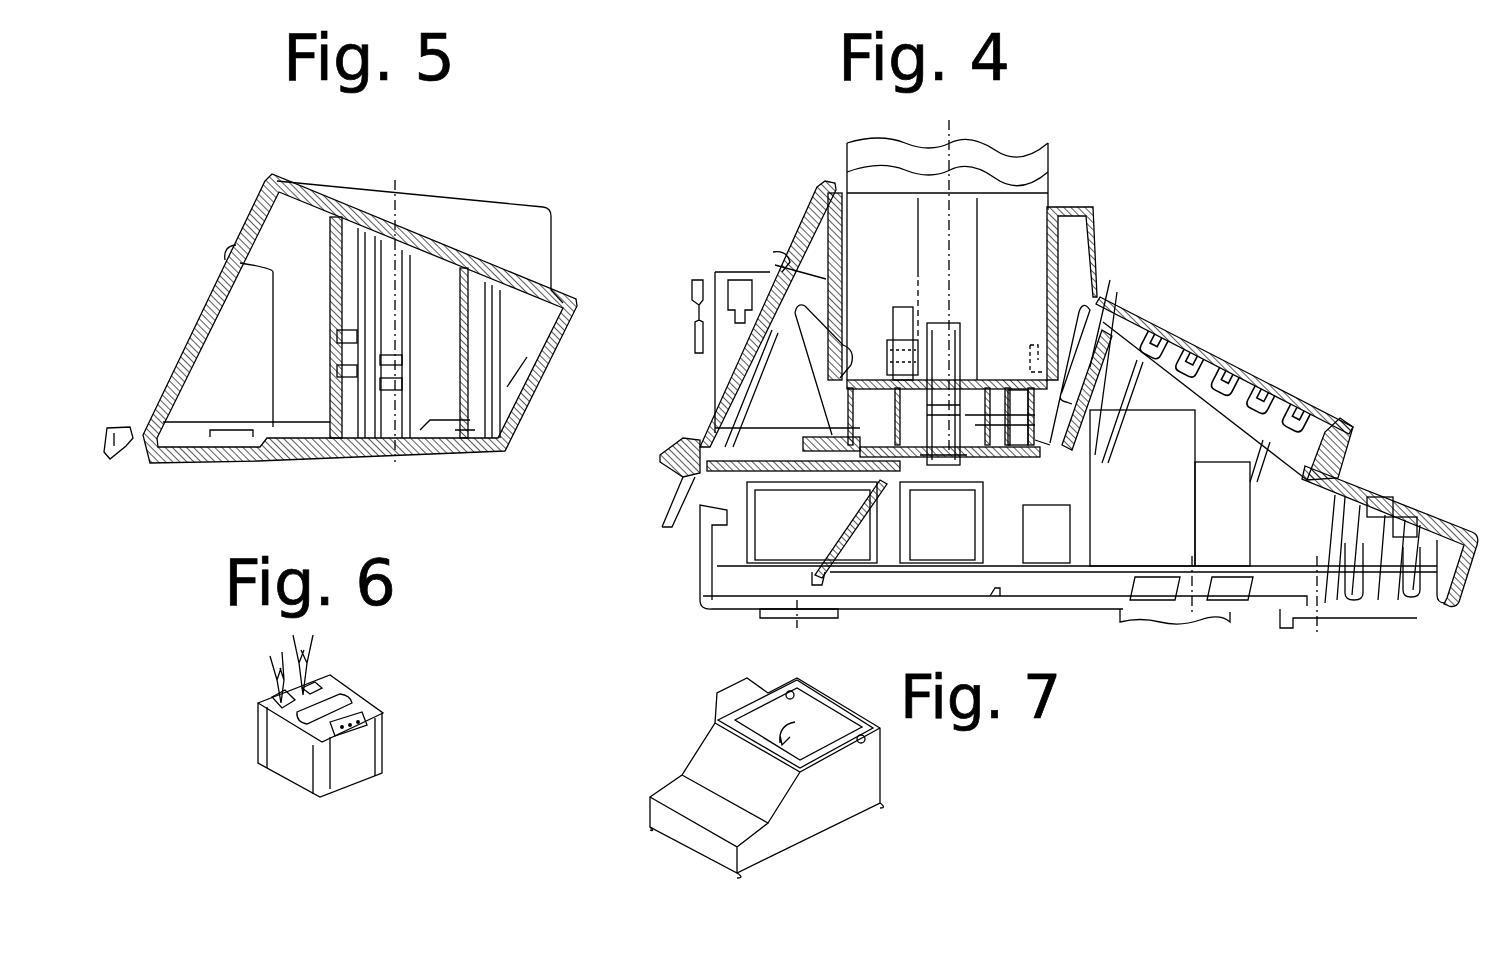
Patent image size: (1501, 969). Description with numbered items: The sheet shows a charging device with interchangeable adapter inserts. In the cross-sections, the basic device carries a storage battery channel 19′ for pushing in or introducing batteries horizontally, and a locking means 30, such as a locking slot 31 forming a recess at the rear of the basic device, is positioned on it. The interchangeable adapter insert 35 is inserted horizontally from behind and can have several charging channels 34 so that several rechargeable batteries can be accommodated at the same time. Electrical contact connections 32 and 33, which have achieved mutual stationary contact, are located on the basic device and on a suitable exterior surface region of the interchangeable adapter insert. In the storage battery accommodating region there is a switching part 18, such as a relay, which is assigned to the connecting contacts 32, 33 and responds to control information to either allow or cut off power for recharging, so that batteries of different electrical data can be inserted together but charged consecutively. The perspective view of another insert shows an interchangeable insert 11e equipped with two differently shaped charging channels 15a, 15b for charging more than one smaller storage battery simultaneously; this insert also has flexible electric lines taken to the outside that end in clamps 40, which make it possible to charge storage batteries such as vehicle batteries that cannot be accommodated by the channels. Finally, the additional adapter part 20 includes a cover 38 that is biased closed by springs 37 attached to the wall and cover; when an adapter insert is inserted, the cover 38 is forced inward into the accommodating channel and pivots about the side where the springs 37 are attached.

In FIG. 6, the interchangeable insert 11e is at (368, 757).
In FIG. 6, the charging channel 15a is at (320, 682).
In FIG. 6, the charging channel 15b is at (346, 706).
In FIG. 4, the switching part 18 is at (818, 503).
In FIG. 4, the storage battery channel 19′ is at (1046, 375).
In FIG. 7, the additional adapter part 20 is at (857, 813).
In FIG. 4, the locking means 30 is at (702, 447).
In FIG. 4, the locking slot 31 is at (692, 475).
In FIG. 4, the electrical contact connection 32 is at (817, 422).
In FIG. 4, the electrical contact connection 33 is at (967, 467).
In FIG. 4, the charging channel 34 is at (1058, 205).
In FIG. 5, the interchangeable adapter insert 35 is at (360, 203).
In FIG. 7, the spring 37 is at (795, 680).
In FIG. 7, the cover 38 is at (820, 705).
In FIG. 6, the clamp 40 is at (292, 640).